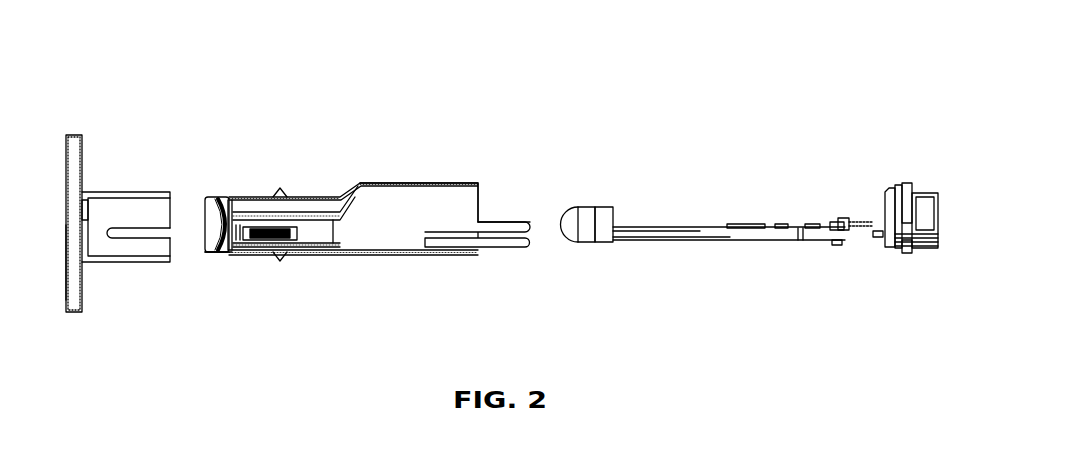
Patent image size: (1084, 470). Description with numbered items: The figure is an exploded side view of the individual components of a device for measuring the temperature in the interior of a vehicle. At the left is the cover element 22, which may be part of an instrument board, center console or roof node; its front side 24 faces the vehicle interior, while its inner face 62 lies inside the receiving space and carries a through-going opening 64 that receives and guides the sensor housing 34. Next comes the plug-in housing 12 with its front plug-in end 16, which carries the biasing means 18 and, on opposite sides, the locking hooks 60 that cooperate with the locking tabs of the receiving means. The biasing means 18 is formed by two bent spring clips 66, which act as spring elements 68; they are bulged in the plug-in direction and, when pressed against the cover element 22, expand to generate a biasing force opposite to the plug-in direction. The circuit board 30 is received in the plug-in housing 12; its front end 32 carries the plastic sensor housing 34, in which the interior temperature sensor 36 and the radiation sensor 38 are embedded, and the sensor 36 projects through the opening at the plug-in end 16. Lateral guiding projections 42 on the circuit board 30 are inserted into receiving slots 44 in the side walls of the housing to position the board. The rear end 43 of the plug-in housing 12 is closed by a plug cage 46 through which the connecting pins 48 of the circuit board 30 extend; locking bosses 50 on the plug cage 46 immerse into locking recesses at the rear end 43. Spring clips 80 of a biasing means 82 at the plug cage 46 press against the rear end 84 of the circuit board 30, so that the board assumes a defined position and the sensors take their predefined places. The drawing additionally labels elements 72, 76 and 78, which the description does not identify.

The plug-in housing 12 is at (440, 183).
The front plug-in end 16 is at (203, 192).
The biasing means 18 is at (229, 192).
The cover element 22 is at (74, 135).
The front side 24 is at (66, 168).
The circuit board 30 is at (722, 224).
The front end 32 is at (655, 160).
The sensor housing 34 is at (608, 207).
The interior temperature sensor 36 is at (566, 244).
The radiation sensor 38 is at (562, 215).
The lateral guiding projections 42 is at (813, 241).
The rear end 43 is at (504, 148).
The receiving slots 44 is at (428, 245).
The plug cage 46 is at (916, 256).
The connecting pins 48 is at (850, 240).
The locking bosses 50 is at (892, 188).
The locking hooks 60 is at (273, 190).
The inner face 62 is at (86, 210).
The through-going opening 64 is at (66, 230).
The spring clips 66 is at (229, 255).
The spring elements 68 is at (203, 262).
The upper tab 72 is at (300, 190).
The inner sleeve 76 is at (296, 250).
The slot 78 is at (118, 238).
The spring clips 80 is at (878, 247).
The biasing means 82 is at (872, 192).
The rear end 84 is at (839, 262).